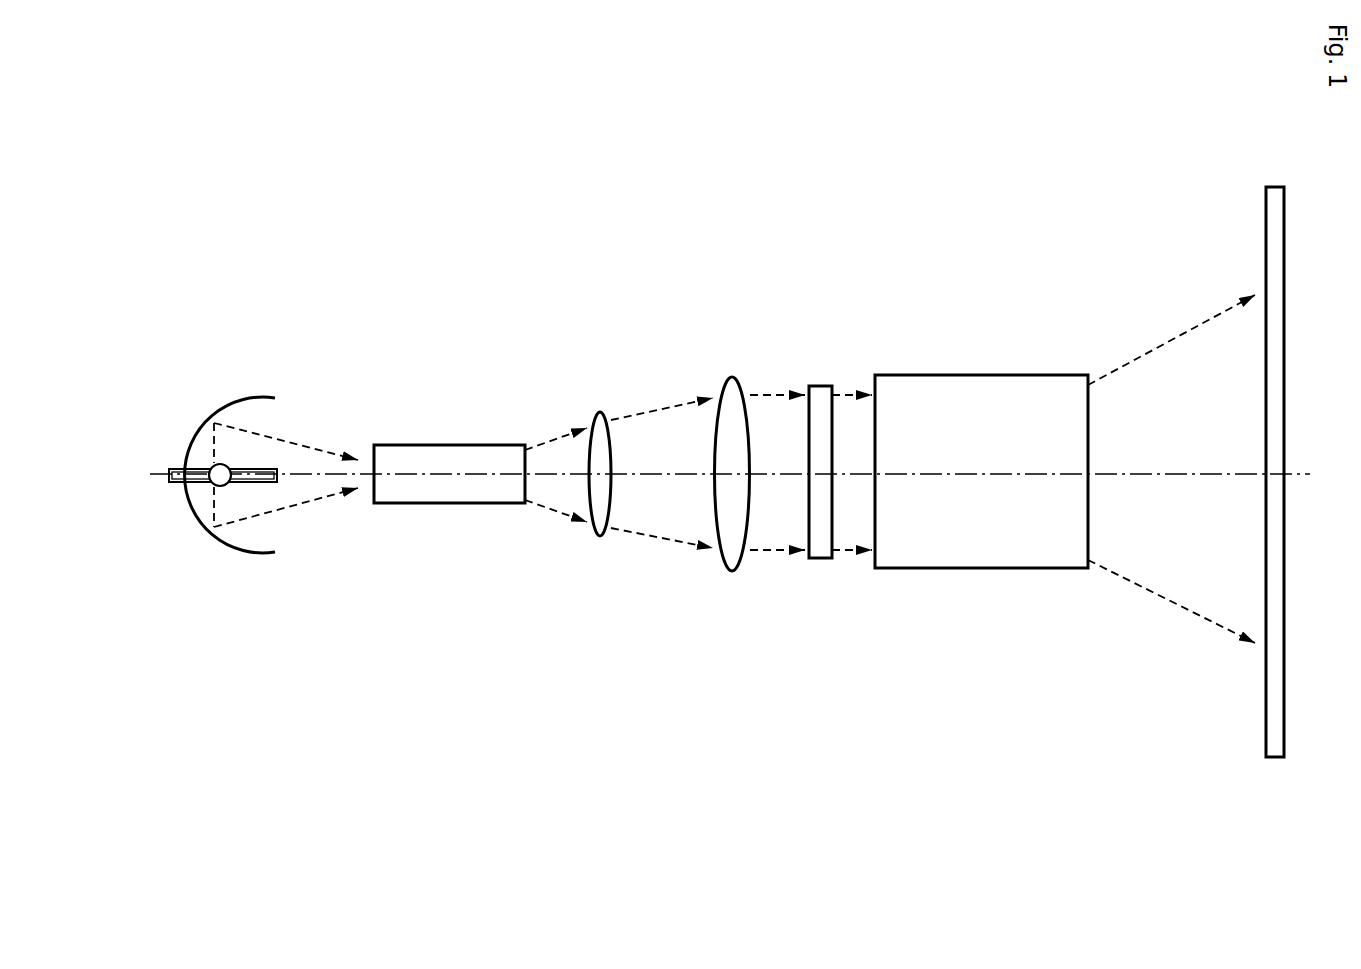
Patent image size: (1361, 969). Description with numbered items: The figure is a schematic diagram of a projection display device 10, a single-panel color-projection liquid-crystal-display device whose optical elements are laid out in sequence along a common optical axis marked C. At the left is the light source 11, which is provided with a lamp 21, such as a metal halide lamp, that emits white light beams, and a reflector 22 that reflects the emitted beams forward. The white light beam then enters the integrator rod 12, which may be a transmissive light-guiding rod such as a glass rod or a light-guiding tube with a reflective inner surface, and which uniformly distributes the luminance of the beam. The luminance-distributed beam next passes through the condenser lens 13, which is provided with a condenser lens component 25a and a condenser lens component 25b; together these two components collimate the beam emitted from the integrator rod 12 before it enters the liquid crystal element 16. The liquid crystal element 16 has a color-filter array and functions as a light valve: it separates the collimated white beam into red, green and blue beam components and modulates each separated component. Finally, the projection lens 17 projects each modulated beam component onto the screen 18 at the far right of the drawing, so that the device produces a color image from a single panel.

The projection display device 10 is at (338, 240).
The light source 11 is at (232, 398).
The integrator rod 12 is at (453, 445).
The condenser lens 13 is at (687, 312).
The liquid crystal element 16 is at (818, 386).
The projection lens 17 is at (985, 375).
The screen 18 is at (1266, 208).
The lamp 21 is at (213, 486).
The reflector 22 is at (232, 543).
The condenser lens component 25a is at (597, 535).
The condenser lens component 25b is at (726, 565).
The optical axis center line C is at (978, 474).